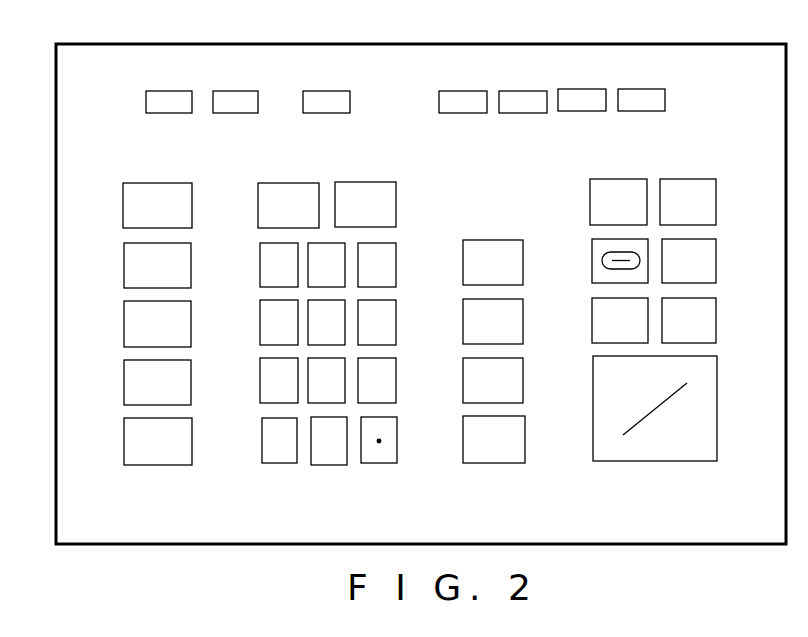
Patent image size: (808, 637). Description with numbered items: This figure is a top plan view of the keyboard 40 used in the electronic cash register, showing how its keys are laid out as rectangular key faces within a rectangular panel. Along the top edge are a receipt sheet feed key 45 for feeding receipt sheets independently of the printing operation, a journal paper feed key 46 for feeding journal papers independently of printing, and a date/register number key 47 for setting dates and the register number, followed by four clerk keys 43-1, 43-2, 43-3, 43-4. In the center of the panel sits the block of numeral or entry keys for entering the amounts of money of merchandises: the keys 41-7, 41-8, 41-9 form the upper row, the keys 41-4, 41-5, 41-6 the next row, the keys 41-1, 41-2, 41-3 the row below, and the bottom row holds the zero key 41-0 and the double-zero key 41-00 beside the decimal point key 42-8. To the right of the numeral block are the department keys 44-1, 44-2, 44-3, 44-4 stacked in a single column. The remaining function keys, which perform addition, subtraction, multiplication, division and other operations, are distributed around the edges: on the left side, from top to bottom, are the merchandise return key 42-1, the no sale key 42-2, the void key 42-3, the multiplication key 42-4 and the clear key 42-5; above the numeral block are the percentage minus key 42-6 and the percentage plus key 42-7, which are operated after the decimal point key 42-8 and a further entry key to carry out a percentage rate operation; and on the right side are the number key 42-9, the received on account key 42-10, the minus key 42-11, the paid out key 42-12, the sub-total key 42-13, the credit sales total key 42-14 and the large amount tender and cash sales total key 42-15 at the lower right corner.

The keyboard 40 is at (626, 548).
The receipt sheet feed key 45 is at (176, 90).
The journal paper feed key 46 is at (251, 90).
The date/register number key 47 is at (339, 90).
The clerk key 43-1 is at (463, 90).
The clerk key 43-2 is at (525, 90).
The clerk key 43-3 is at (585, 89).
The clerk key 43-4 is at (650, 89).
The merchandise return key 42-1 is at (149, 183).
The no sale key 42-2 is at (124, 265).
The void key 42-3 is at (124, 325).
The multiplication key 42-4 is at (124, 386).
The clear key 42-5 is at (124, 445).
The percentage minus key 42-6 is at (302, 183).
The percentage plus key 42-7 is at (382, 182).
The decimal point key 42-8 is at (380, 463).
The number key 42-9 is at (640, 159).
The received on account key 42-10 is at (724, 159).
The minus key 42-11 is at (592, 274).
The paid out key 42-12 is at (716, 256).
The sub-total key 42-13 is at (592, 330).
The credit sales total key 42-14 is at (716, 318).
The amount tender and cash sales total key 42-15 is at (630, 461).
The numeral key 41-0 is at (273, 463).
The numeral key 41-00 is at (334, 465).
The numeral key 41-1 is at (260, 388).
The numeral key 41-2 is at (309, 403).
The numeral key 41-3 is at (396, 395).
The numeral key 41-4 is at (260, 327).
The numeral key 41-5 is at (309, 345).
The numeral key 41-6 is at (396, 335).
The numeral key 41-7 is at (260, 263).
The numeral key 41-8 is at (310, 282).
The numeral key 41-9 is at (397, 267).
The department key 44-1 is at (518, 240).
The department key 44-2 is at (523, 325).
The department key 44-3 is at (463, 398).
The department key 44-4 is at (487, 463).